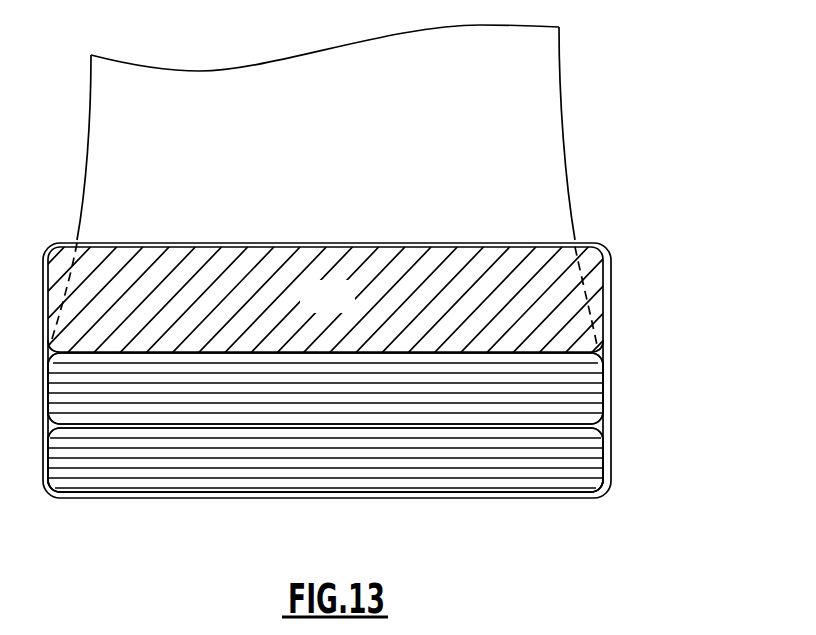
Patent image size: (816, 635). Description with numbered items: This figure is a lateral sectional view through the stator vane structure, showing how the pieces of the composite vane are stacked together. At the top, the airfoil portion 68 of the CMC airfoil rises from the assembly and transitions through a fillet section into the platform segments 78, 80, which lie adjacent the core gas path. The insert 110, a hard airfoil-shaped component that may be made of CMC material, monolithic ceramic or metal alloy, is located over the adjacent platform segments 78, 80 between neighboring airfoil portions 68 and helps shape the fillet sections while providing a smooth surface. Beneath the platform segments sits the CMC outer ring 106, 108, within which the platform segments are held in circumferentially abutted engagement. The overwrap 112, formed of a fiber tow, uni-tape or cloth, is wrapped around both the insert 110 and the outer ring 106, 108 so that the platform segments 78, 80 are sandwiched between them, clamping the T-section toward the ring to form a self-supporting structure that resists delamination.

The airfoil portion 68 is at (530, 127).
The overwrap 112 is at (611, 325).
The insert 110 is at (348, 309).
The platform segment 78 is at (582, 385).
The platform segment 80 is at (325, 388).
The CMC outer ring 106 is at (582, 456).
The second layer 108 is at (325, 460).